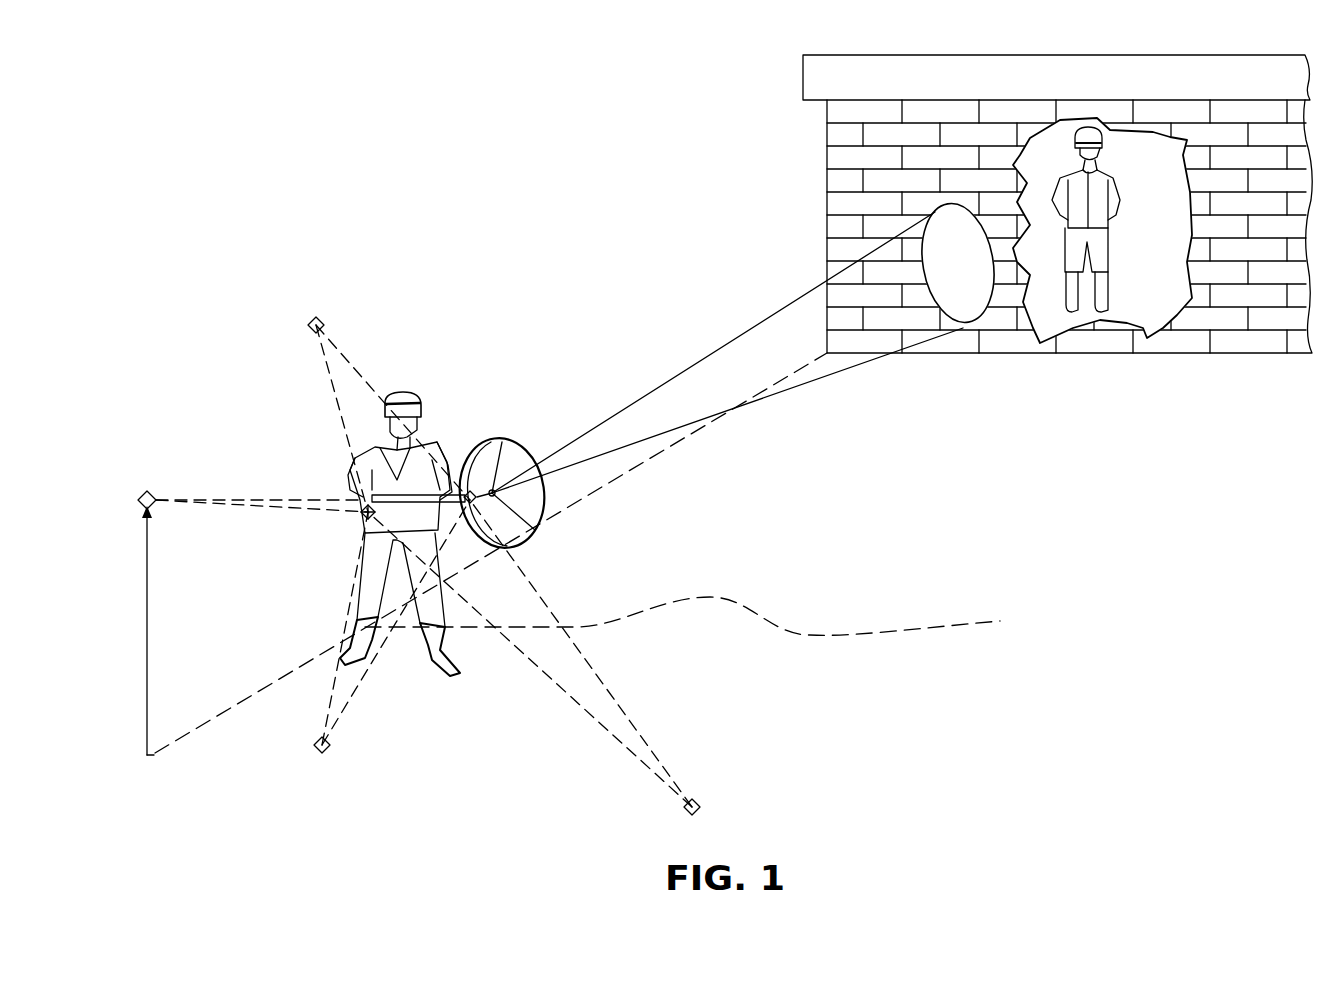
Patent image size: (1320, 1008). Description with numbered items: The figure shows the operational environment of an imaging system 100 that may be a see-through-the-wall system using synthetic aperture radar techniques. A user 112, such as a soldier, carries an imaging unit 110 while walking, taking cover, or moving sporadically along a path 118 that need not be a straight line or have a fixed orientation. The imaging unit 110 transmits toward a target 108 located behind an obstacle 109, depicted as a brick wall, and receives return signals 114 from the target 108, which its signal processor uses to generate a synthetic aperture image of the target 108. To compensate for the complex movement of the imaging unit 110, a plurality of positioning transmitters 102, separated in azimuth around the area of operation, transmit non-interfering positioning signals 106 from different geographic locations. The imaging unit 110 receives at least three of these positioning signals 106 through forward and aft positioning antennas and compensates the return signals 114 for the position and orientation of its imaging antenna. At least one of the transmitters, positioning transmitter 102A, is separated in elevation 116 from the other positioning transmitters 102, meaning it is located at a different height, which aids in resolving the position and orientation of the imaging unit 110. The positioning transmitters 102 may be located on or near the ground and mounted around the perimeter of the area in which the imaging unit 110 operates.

The imaging system 100 is at (248, 193).
The positioning transmitters 102 is at (308, 318).
The positioning transmitter 102A is at (140, 492).
The positioning signals 106 is at (323, 388).
The target 108 is at (1092, 290).
The obstacle 109 is at (1225, 322).
The imaging unit 110 is at (360, 512).
The user 112 is at (414, 392).
The return signals 114 is at (713, 347).
The elevation 116 is at (146, 634).
The path 118 is at (850, 640).